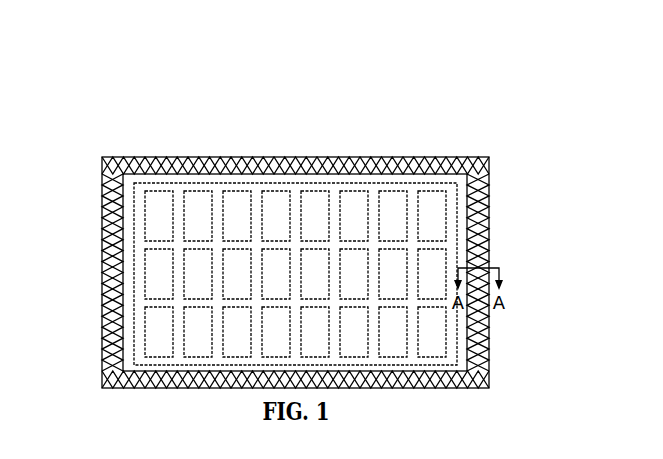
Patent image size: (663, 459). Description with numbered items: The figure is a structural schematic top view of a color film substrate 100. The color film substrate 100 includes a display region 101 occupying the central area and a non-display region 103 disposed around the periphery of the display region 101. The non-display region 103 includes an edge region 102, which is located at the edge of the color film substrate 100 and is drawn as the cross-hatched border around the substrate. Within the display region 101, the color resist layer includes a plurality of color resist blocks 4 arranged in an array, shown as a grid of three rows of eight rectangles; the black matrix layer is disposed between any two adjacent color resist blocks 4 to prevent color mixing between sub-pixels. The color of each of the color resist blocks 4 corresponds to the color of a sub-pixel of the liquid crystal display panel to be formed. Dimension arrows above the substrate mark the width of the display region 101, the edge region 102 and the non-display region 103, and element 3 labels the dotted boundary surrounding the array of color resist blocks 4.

The color film substrate 100 is at (488, 24).
The display region 101 is at (294, 234).
The edge region 102 is at (168, 107).
The non-display region 103 is at (134, 157).
The pixel definition layer 3 is at (142, 214).
The color resist blocks 4 is at (336, 269).